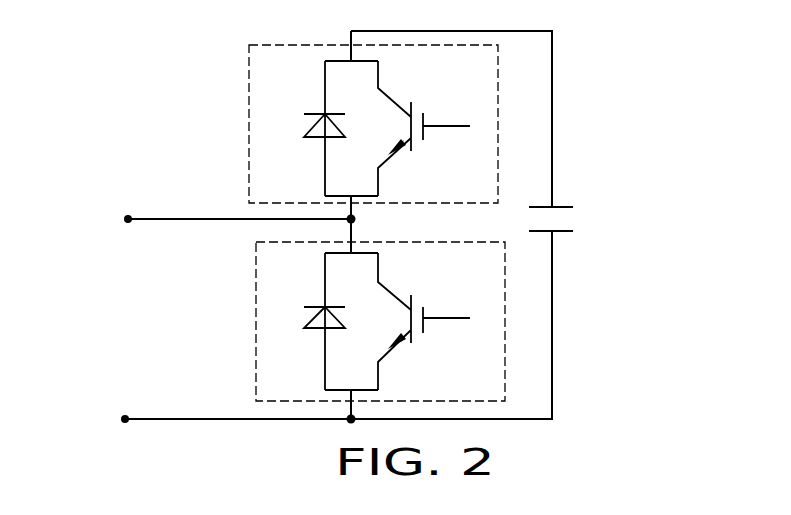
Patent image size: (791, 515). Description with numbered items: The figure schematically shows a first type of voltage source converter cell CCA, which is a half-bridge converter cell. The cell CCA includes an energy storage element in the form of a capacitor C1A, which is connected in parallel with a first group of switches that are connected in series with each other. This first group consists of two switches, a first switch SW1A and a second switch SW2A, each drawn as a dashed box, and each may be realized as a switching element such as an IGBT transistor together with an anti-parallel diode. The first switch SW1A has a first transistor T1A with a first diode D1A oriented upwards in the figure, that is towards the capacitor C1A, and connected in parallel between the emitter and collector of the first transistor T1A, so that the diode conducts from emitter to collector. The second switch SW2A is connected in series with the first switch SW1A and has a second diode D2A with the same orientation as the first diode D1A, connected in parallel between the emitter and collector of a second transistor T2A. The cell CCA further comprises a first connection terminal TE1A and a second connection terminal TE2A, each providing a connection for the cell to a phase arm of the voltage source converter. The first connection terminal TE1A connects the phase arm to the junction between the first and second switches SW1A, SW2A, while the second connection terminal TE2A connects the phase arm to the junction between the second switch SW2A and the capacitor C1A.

The converter cell CCA is at (568, 140).
The capacitor C1A is at (587, 215).
The first switch SW1A is at (248, 110).
The second switch SW2A is at (255, 330).
The first diode D1A is at (303, 109).
The second diode D2A is at (303, 303).
The first transistor T1A is at (431, 128).
The second transistor T2A is at (431, 321).
The first connection terminal TE1A is at (190, 220).
The second connection terminal TE2A is at (193, 408).